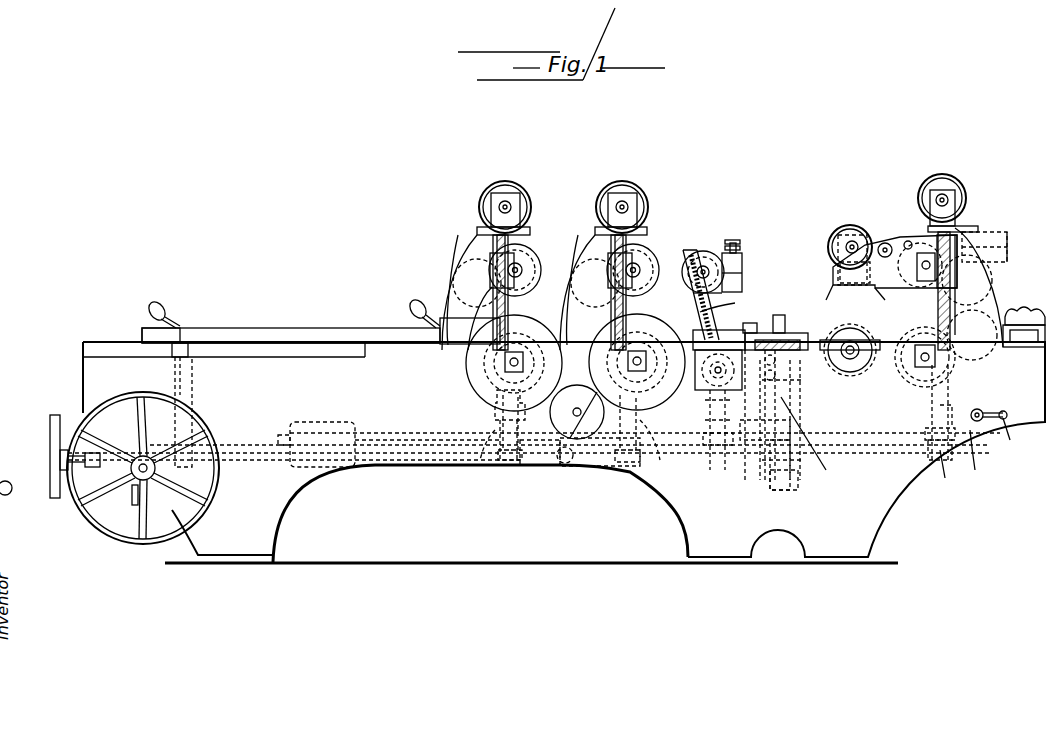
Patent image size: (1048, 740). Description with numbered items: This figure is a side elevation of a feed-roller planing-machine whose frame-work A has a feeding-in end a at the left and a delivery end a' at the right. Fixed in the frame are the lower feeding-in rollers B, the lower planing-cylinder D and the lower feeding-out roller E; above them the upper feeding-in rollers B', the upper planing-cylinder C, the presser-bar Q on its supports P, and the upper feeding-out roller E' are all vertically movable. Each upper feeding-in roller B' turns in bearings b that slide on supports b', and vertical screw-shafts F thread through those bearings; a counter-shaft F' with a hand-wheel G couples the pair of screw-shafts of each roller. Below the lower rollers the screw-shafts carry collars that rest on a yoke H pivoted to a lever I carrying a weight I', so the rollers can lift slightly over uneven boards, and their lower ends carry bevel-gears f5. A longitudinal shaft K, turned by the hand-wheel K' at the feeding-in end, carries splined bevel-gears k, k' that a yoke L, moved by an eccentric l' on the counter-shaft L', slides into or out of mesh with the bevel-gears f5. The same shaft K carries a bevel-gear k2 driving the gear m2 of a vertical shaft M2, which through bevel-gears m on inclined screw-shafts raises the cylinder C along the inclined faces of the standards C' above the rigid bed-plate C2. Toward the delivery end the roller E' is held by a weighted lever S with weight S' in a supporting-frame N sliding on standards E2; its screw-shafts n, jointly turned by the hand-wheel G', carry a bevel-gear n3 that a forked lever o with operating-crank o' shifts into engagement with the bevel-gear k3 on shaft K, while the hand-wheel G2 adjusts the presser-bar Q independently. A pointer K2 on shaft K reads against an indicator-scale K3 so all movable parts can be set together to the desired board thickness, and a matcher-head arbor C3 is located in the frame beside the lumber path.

The frame-work A is at (564, 452).
The feeding-in end a is at (93, 364).
The delivery end a' is at (1025, 382).
The lower feeding-in rollers B is at (576, 354).
The upper feeding-in rollers B' is at (585, 262).
The bearings b is at (514, 274).
The supports b' is at (510, 283).
The upper planing-cylinder C is at (735, 251).
The standards C' is at (703, 254).
The bed-plate C2 is at (730, 330).
The arbor C3 is at (812, 420).
The lower planing-cylinder D is at (858, 365).
The lower feeding-out roller E is at (924, 370).
The upper feeding-out roller E' is at (892, 229).
The supporting-standards E2 is at (990, 287).
The screw-shafts F is at (497, 292).
The counter-shaft F' is at (561, 208).
The hand-wheel G is at (569, 200).
The hand-wheel G' is at (933, 200).
The hand-wheel G2 is at (852, 232).
The yoke H is at (498, 405).
The lever I is at (427, 426).
The weight I' is at (316, 431).
The shaft K is at (157, 468).
The hand-wheel K' is at (49, 456).
The pointer K2 is at (196, 380).
The indicator-scale K3 is at (170, 357).
The bevel-gear k is at (513, 451).
The bevel-gear k' is at (627, 451).
The bevel-gear k2 is at (757, 480).
The bevel-gear k3 is at (945, 432).
The yoke L is at (600, 478).
The counter-shaft L' is at (579, 473).
The eccentric l' is at (548, 473).
The bevel-gears m is at (726, 303).
The gear m2 is at (696, 430).
The vertically-disposed shaft M2 is at (715, 455).
The supporting-frame N is at (878, 305).
The screw-shafts n is at (936, 310).
The bevel-gear n3 is at (925, 432).
The forked lever o is at (988, 403).
The operating-crank o' is at (1009, 438).
The supports P is at (835, 272).
The presser-bar Q is at (836, 303).
The weighted lever S is at (984, 233).
The weight S' is at (1006, 233).
The bevel-gears f5 is at (500, 438).